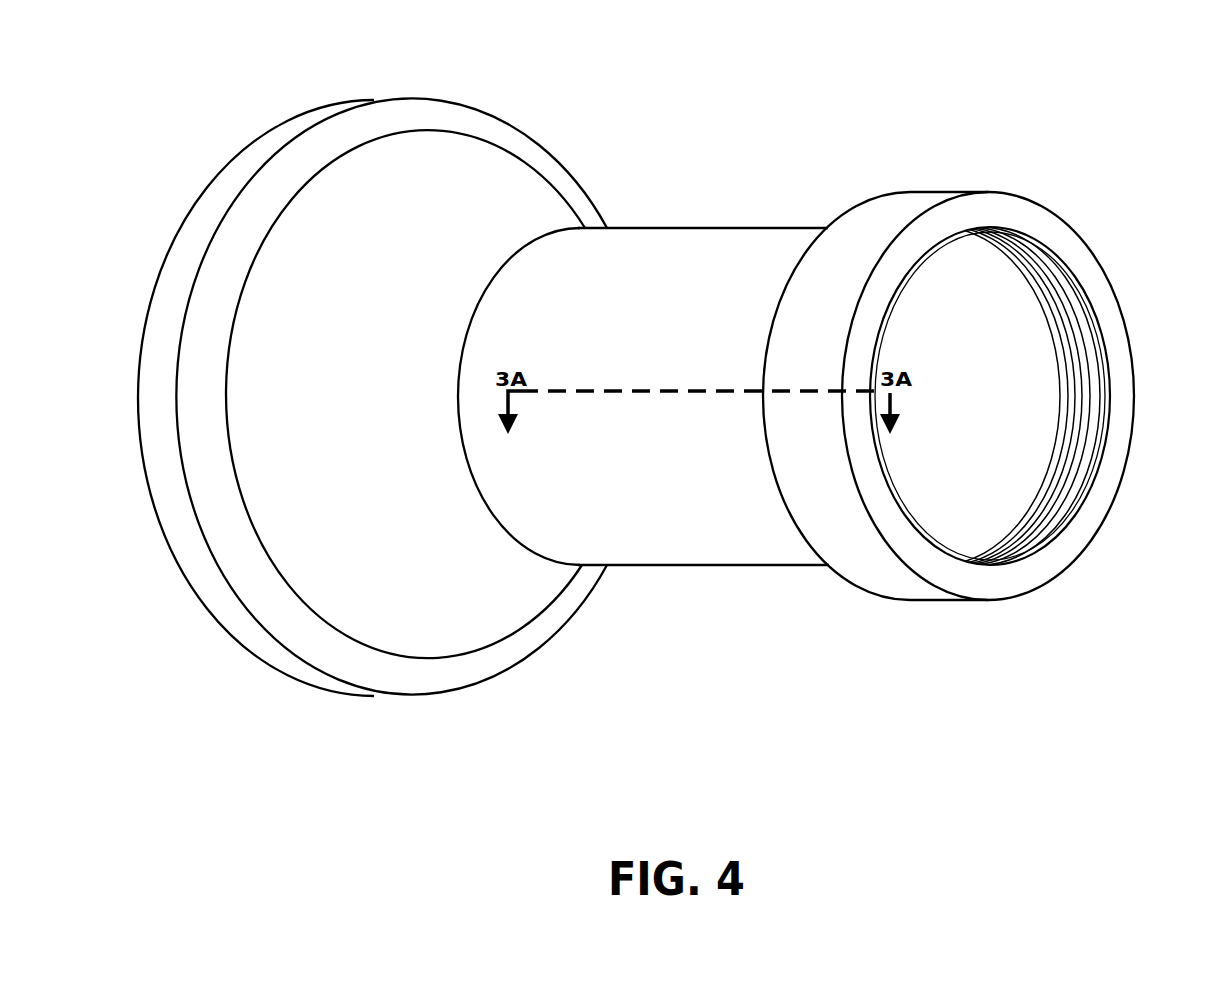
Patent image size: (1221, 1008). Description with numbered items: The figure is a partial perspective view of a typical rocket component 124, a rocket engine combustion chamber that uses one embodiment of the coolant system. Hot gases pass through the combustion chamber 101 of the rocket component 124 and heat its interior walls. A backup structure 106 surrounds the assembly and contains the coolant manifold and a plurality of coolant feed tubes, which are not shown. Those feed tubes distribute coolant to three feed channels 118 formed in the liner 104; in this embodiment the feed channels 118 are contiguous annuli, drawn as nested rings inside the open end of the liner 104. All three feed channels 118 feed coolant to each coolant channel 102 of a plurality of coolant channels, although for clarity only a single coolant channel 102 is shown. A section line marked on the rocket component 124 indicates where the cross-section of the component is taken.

The combustion chamber 101 is at (990, 350).
The coolant channel 102 is at (927, 532).
The liner 104 is at (1090, 310).
The backup structure 106 is at (945, 573).
The feed channels 118 is at (1057, 462).
The rocket component 124 is at (282, 104).